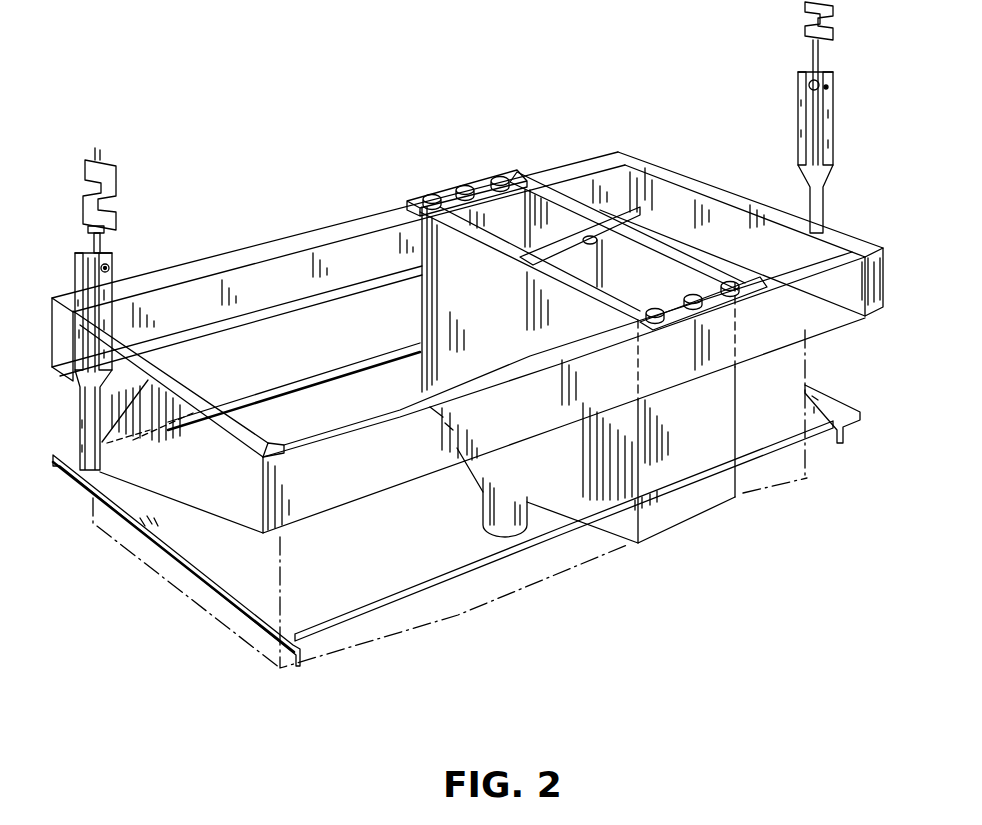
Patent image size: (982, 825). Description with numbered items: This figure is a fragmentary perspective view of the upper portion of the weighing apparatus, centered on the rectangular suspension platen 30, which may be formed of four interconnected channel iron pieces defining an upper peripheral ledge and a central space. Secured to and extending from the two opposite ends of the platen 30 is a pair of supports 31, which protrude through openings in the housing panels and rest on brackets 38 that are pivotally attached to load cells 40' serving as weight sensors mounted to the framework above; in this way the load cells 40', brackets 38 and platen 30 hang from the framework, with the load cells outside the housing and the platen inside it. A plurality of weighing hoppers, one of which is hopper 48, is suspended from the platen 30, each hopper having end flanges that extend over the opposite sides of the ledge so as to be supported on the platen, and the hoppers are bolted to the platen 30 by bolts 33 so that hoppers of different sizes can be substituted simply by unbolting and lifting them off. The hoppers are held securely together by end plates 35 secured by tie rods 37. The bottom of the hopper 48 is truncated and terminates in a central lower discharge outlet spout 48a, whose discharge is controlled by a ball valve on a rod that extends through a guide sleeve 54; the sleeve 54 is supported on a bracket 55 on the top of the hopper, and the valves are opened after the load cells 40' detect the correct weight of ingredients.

The suspension platen 30 is at (277, 245).
The support 31 is at (133, 438).
The bolt 33 is at (468, 190).
The end plate 35 is at (237, 607).
The tie rod 37 is at (367, 610).
The bracket 38 is at (80, 402).
The load cell 40' is at (458, 116).
The hopper 48 is at (500, 314).
The discharge outlet spout 48a is at (492, 513).
The guide sleeve 54 is at (603, 262).
The bracket 55 is at (563, 222).